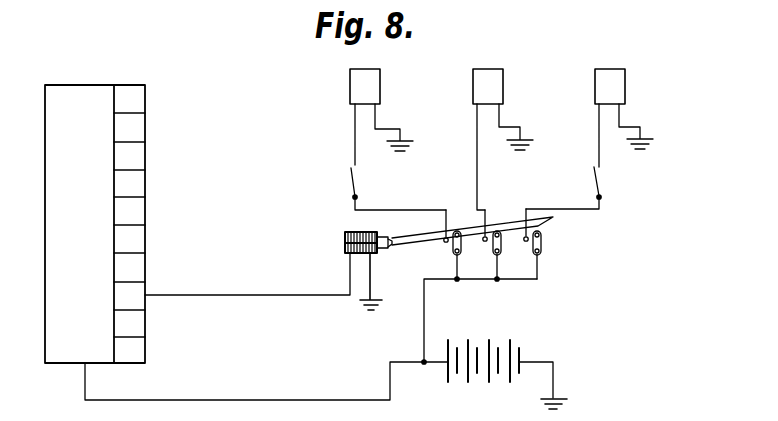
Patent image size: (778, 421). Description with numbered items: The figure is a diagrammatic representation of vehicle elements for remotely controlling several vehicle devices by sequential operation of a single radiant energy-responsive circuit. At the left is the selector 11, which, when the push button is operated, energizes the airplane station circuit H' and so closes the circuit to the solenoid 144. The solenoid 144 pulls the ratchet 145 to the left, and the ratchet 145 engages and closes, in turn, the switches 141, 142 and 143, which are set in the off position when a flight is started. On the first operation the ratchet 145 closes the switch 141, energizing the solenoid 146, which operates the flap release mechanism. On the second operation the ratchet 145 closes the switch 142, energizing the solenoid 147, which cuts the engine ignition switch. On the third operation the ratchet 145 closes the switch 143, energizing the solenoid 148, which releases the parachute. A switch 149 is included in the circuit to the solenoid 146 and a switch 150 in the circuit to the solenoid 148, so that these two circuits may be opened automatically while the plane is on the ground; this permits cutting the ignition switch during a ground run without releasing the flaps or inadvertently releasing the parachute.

The selector 11 is at (45, 243).
The switch 141 is at (460, 254).
The switch 142 is at (500, 254).
The switch 143 is at (541, 254).
The solenoid 144 is at (345, 247).
The ratchet 145 is at (548, 221).
The solenoid 146 is at (380, 86).
The solenoid 147 is at (503, 86).
The solenoid 148 is at (625, 86).
The switch 149 is at (357, 184).
The switch 150 is at (600, 183).